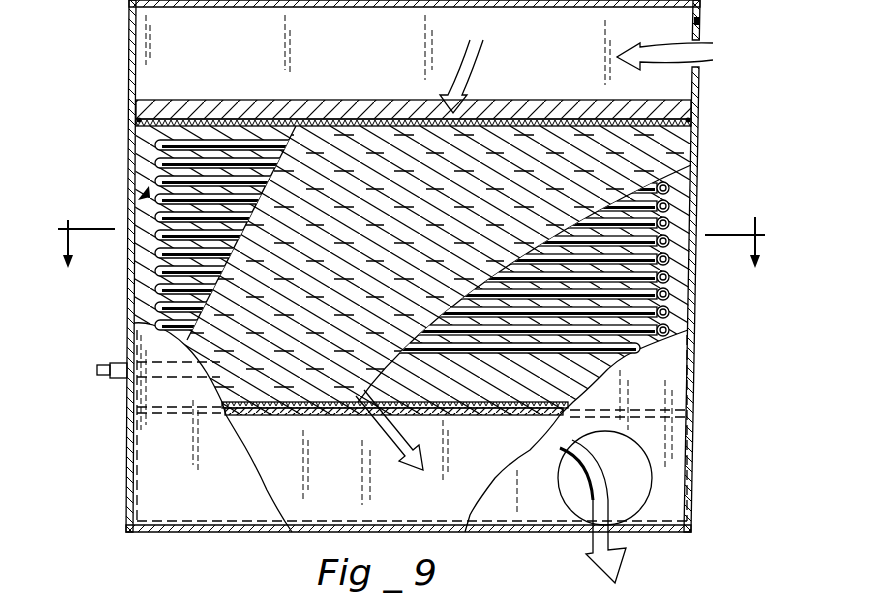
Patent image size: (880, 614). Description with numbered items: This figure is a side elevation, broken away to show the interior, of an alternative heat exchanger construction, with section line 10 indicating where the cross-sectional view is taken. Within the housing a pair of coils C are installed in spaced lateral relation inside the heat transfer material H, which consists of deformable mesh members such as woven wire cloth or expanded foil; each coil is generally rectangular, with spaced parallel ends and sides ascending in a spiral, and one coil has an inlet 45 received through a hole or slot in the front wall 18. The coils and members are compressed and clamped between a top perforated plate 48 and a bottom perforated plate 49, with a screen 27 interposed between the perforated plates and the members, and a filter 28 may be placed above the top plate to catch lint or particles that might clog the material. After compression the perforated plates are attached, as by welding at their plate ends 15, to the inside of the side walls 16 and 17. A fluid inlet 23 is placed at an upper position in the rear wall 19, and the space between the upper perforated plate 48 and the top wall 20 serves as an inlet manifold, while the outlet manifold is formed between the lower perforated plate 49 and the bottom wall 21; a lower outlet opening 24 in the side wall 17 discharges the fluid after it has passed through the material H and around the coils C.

The section line 10 is at (413, 261).
The plate end joint 15 is at (137, 117).
The side wall 16 is at (375, 43).
The side wall 17 is at (148, 473).
The front wall 18 is at (130, 167).
The rear wall 19 is at (697, 167).
The top wall 20 is at (483, 5).
The bottom wall 21 is at (408, 525).
The fluid inlet 23 is at (700, 22).
The lower outlet opening 24 is at (641, 466).
The screen 27 is at (278, 127).
The filter 28 is at (477, 119).
The inlet 45 is at (108, 362).
The top perforated plate 48 is at (338, 120).
The bottom perforated plate 49 is at (322, 415).
The coil C is at (243, 140).
The heat transfer material H is at (132, 200).